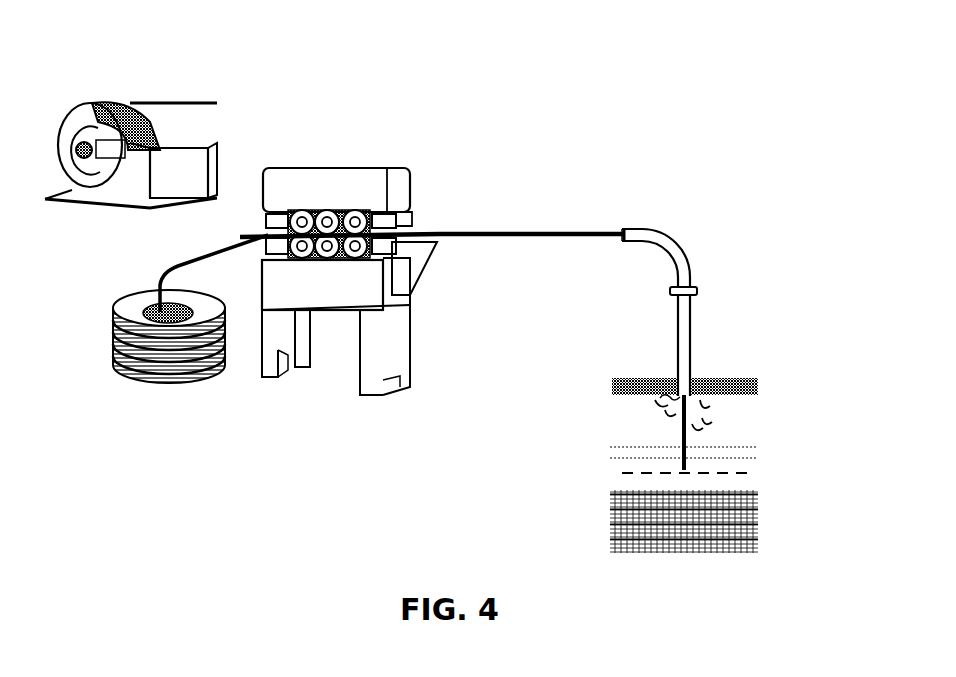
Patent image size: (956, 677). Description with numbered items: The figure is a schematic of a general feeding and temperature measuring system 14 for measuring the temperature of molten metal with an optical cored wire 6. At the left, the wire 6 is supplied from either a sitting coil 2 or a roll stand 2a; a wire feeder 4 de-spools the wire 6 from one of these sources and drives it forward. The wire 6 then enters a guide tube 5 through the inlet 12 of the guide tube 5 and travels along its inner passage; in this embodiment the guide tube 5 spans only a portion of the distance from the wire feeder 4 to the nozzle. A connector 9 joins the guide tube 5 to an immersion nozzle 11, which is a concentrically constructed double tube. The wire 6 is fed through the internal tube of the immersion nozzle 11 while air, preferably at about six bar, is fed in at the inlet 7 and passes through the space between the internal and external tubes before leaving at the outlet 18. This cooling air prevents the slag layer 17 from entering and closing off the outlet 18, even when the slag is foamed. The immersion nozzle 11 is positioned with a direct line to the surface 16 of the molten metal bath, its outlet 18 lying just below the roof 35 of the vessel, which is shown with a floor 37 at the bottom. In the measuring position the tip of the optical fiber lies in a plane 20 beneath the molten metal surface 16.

The roll stand 2a is at (102, 103).
The sitting coil 2 is at (102, 325).
The wire feeder 4 is at (323, 168).
The optical cored wire 6 is at (472, 229).
The guide tube 5 is at (665, 232).
The inlet 12 is at (622, 240).
The connector 9 is at (672, 290).
The inlet 7 is at (673, 302).
The immersion nozzle 11 is at (692, 315).
The roof 35 is at (735, 378).
The outlet 18 is at (692, 398).
The slag layer 17 is at (760, 447).
The surface 16 is at (617, 462).
The plane 20 is at (748, 473).
The floor 37 is at (630, 525).
The feeding and temperature measuring system 14 is at (570, 146).